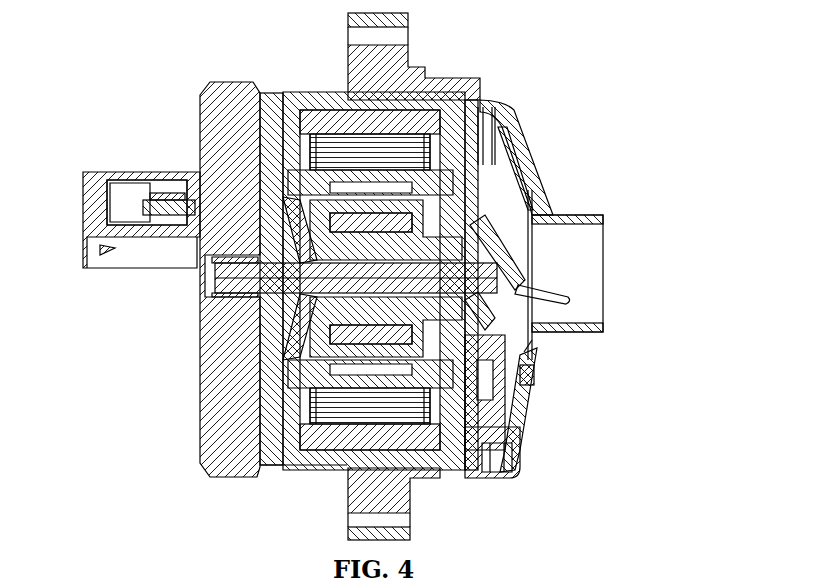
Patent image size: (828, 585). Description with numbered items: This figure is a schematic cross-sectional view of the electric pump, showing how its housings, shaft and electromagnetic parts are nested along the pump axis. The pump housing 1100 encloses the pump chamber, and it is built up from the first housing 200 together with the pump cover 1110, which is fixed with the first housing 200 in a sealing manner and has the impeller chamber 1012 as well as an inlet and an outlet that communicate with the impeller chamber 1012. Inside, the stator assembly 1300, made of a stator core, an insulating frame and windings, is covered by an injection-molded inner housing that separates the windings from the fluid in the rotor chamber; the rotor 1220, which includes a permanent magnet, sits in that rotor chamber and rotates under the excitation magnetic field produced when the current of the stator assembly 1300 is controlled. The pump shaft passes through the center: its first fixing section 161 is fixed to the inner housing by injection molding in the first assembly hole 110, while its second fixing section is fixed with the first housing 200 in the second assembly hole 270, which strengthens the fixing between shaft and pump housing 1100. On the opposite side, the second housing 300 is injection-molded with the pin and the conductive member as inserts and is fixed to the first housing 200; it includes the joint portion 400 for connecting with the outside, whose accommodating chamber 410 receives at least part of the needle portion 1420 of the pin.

The second housing 300 is at (213, 407).
The first fixing section 161 is at (207, 462).
The first housing 200 is at (273, 458).
The joint portion 400 is at (142, 262).
The accommodating chamber 410 is at (130, 193).
The needle portion 1420 is at (150, 213).
The first assembly hole 110 is at (278, 116).
The second assembly hole 270 is at (243, 258).
The pump housing 1100 is at (407, 42).
The rotor 1220 is at (534, 375).
The impeller chamber 1012 is at (520, 393).
The pump cover 1110 is at (520, 453).
The stator assembly 1300 is at (450, 468).